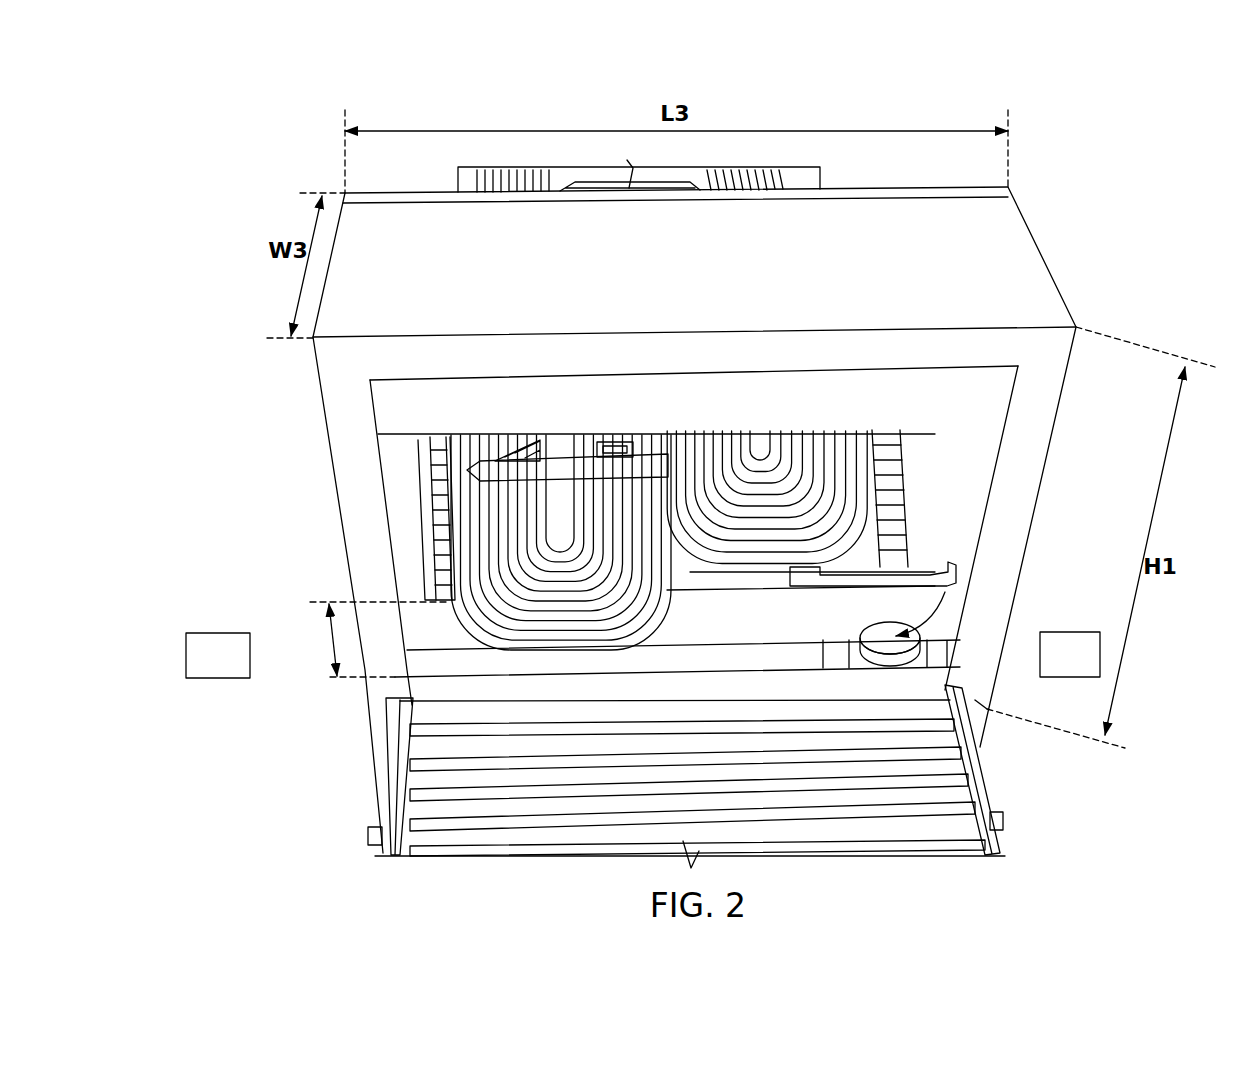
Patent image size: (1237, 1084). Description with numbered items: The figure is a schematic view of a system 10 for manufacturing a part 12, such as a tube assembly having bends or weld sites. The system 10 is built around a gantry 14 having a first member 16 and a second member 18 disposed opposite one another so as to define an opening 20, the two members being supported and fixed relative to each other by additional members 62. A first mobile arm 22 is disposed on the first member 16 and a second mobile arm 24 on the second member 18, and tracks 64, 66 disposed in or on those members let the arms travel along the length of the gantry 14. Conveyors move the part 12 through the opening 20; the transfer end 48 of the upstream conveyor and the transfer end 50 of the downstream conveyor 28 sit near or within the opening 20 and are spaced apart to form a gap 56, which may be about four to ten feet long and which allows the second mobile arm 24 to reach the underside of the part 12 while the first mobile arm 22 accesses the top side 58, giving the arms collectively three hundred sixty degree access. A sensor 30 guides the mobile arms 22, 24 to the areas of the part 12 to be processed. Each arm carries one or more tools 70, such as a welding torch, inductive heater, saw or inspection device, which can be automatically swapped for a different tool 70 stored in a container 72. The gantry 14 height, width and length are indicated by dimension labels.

The system 10 is at (296, 126).
The gantry 14 is at (272, 212).
The first member 16 is at (1030, 243).
The track 64 is at (810, 395).
The top side 58 is at (820, 470).
The part 12 is at (740, 512).
The tool 70 is at (655, 435).
The transfer end 48 is at (902, 558).
The additional members 62 is at (355, 567).
The container 72 is at (232, 669).
The gap 56 is at (324, 644).
The opening 20 is at (430, 482).
The first mobile arm 22 is at (473, 503).
The second member 18 is at (520, 662).
The transfer end 50 is at (541, 709).
The downstream conveyor 28 is at (380, 808).
The track 66 is at (665, 687).
The second mobile arm 24 is at (987, 709).
The sensor 30 is at (600, 437).